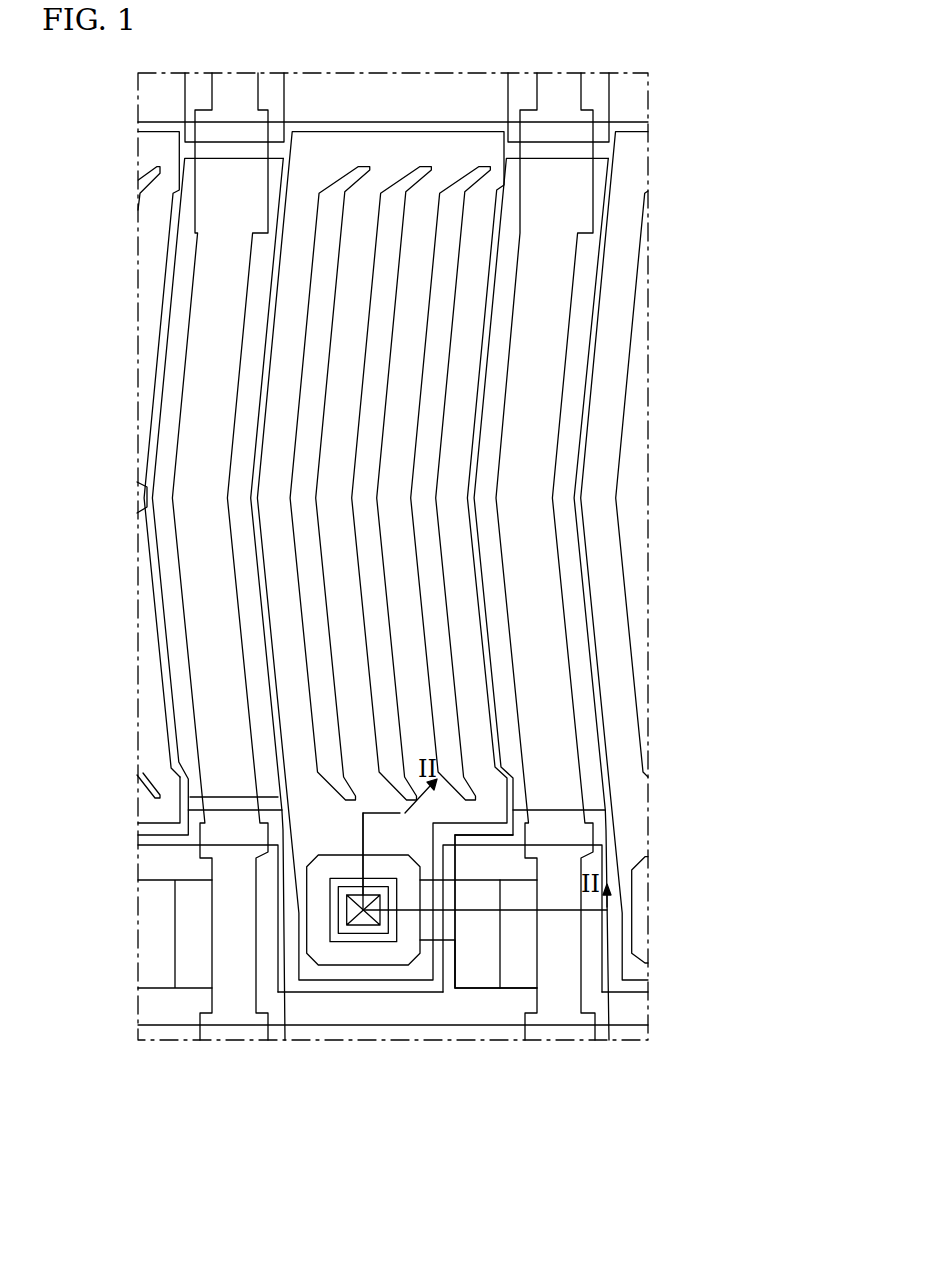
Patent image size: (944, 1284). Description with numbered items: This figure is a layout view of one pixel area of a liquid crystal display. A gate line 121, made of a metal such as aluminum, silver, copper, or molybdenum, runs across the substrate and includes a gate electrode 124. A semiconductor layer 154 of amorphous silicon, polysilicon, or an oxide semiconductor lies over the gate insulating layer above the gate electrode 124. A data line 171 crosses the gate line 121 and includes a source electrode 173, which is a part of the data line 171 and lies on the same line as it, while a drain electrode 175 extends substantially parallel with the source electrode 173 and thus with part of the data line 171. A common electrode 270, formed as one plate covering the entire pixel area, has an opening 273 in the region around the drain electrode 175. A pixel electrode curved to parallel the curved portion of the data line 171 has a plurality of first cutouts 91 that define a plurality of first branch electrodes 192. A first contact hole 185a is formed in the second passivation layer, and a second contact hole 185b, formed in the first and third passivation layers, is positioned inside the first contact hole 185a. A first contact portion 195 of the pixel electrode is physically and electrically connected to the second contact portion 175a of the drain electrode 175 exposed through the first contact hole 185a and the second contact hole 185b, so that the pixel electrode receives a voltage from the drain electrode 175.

The first cutouts 91 is at (425, 622).
The gate line 121 is at (630, 993).
The gate electrode 124 is at (602, 932).
The semiconductor layer 154 is at (515, 988).
The data line 171 is at (153, 562).
The source electrode 173 is at (537, 945).
The drain electrode 175 is at (453, 975).
The second contact portion 175a is at (312, 960).
The first contact hole 185a is at (343, 947).
The second contact hole 185b is at (373, 927).
The first branch electrodes 192 is at (400, 640).
The first contact portion 195 is at (397, 980).
The common electrode 270 is at (508, 272).
The opening 273 is at (340, 918).